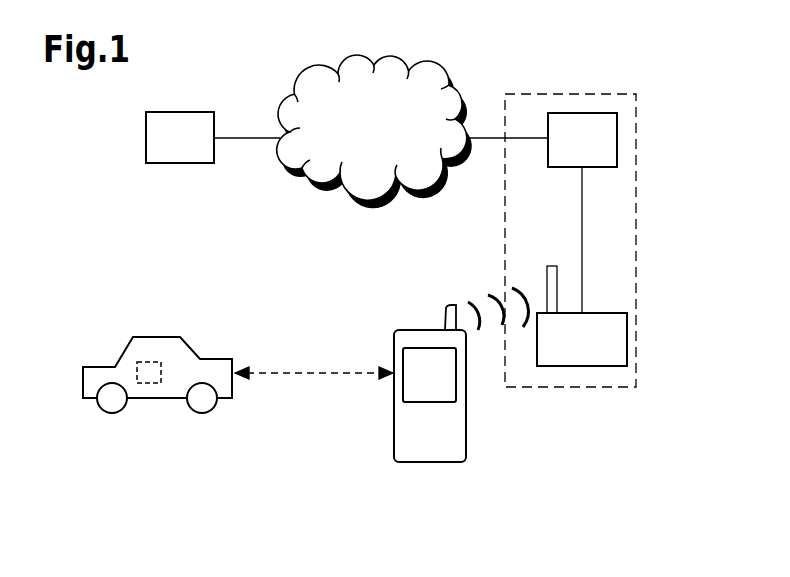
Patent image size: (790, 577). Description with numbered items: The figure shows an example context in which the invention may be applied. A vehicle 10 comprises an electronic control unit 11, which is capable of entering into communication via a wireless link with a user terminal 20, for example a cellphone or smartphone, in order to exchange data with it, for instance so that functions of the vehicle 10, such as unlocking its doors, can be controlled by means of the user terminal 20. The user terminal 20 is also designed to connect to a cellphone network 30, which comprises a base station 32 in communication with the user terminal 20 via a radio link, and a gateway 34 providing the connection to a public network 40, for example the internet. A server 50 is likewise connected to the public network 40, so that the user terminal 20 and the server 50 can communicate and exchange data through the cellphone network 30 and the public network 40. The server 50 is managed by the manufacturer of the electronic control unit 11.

The vehicle 10 is at (157, 353).
The electronic control unit 11 is at (153, 383).
The user terminal 20 is at (380, 436).
The cellphone network 30 is at (612, 253).
The base station 32 is at (566, 354).
The gateway 34 is at (566, 154).
The public network 40 is at (354, 134).
The server 50 is at (164, 152).